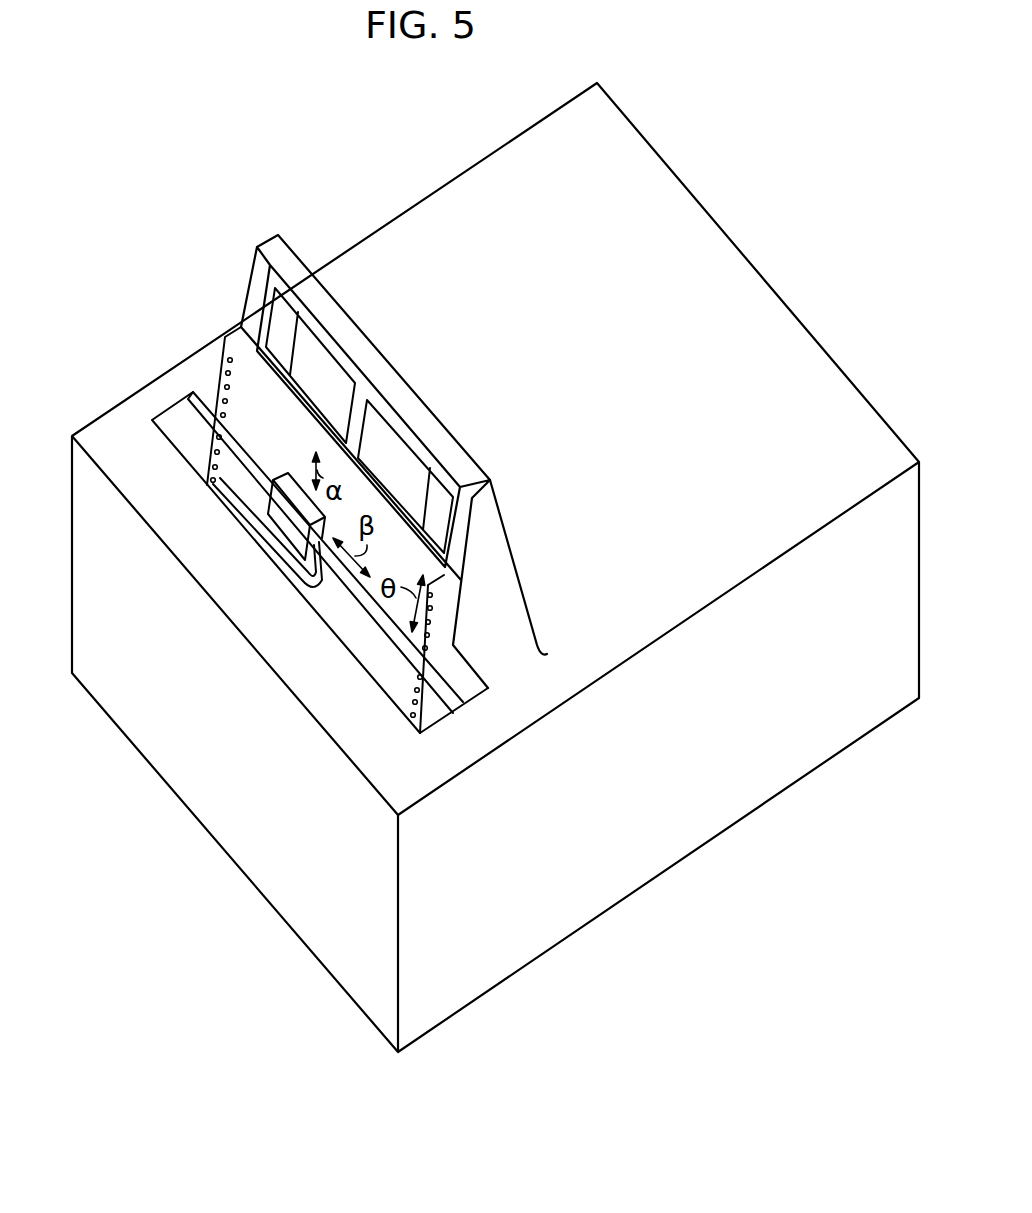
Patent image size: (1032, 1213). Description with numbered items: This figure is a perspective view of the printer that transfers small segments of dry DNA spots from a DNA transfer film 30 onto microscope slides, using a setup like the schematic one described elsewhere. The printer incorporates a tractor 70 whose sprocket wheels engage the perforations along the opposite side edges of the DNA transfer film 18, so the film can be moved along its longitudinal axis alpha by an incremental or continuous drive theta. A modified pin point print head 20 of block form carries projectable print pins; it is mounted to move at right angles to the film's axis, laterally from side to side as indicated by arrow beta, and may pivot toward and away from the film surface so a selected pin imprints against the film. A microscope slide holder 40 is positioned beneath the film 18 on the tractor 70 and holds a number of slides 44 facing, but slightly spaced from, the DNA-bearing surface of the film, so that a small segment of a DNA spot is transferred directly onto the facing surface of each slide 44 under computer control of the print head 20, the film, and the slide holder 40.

The DNA transfer film 18 is at (382, 683).
The print head 20 is at (288, 523).
The DNA transfer film 30 is at (755, 202).
The slide holder 40 is at (460, 487).
The slide 44 is at (330, 375).
The tractor 70 is at (493, 585).